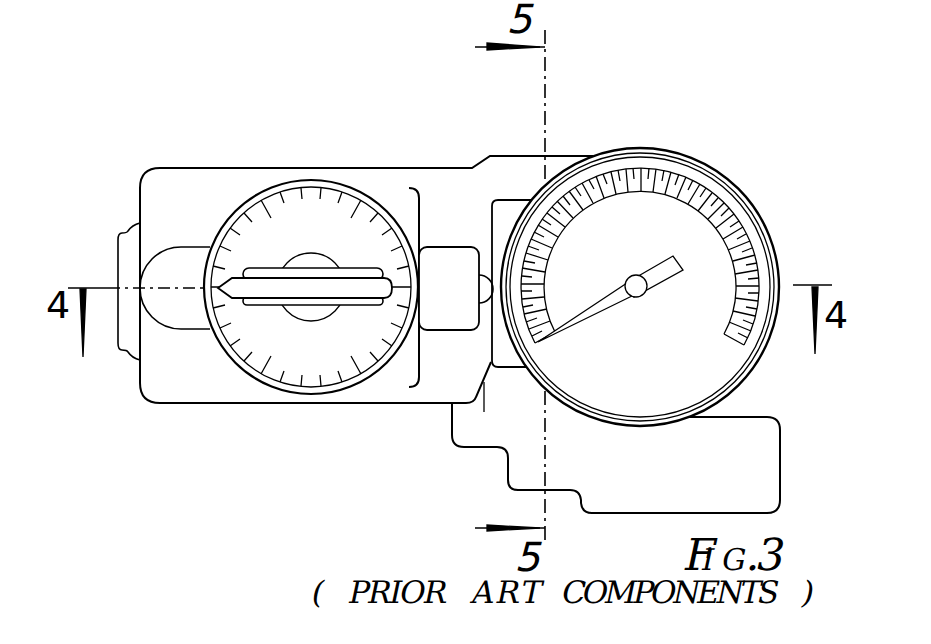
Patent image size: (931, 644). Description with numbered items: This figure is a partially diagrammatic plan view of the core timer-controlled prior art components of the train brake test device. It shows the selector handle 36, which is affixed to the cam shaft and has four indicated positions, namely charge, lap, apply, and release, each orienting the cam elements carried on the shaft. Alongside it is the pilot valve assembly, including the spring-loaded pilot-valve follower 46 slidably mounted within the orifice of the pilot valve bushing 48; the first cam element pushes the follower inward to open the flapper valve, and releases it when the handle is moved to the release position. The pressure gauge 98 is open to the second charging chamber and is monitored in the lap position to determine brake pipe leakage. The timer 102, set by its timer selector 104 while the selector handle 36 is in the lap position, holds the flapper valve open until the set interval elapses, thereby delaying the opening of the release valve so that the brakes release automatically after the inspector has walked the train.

The selector handle 36 is at (650, 480).
The pilot-valve follower 46 is at (482, 285).
The pilot valve bushing 48 is at (453, 267).
The pressure gauge 98 is at (572, 372).
The timer 102 is at (335, 375).
The timer selector 104 is at (313, 278).